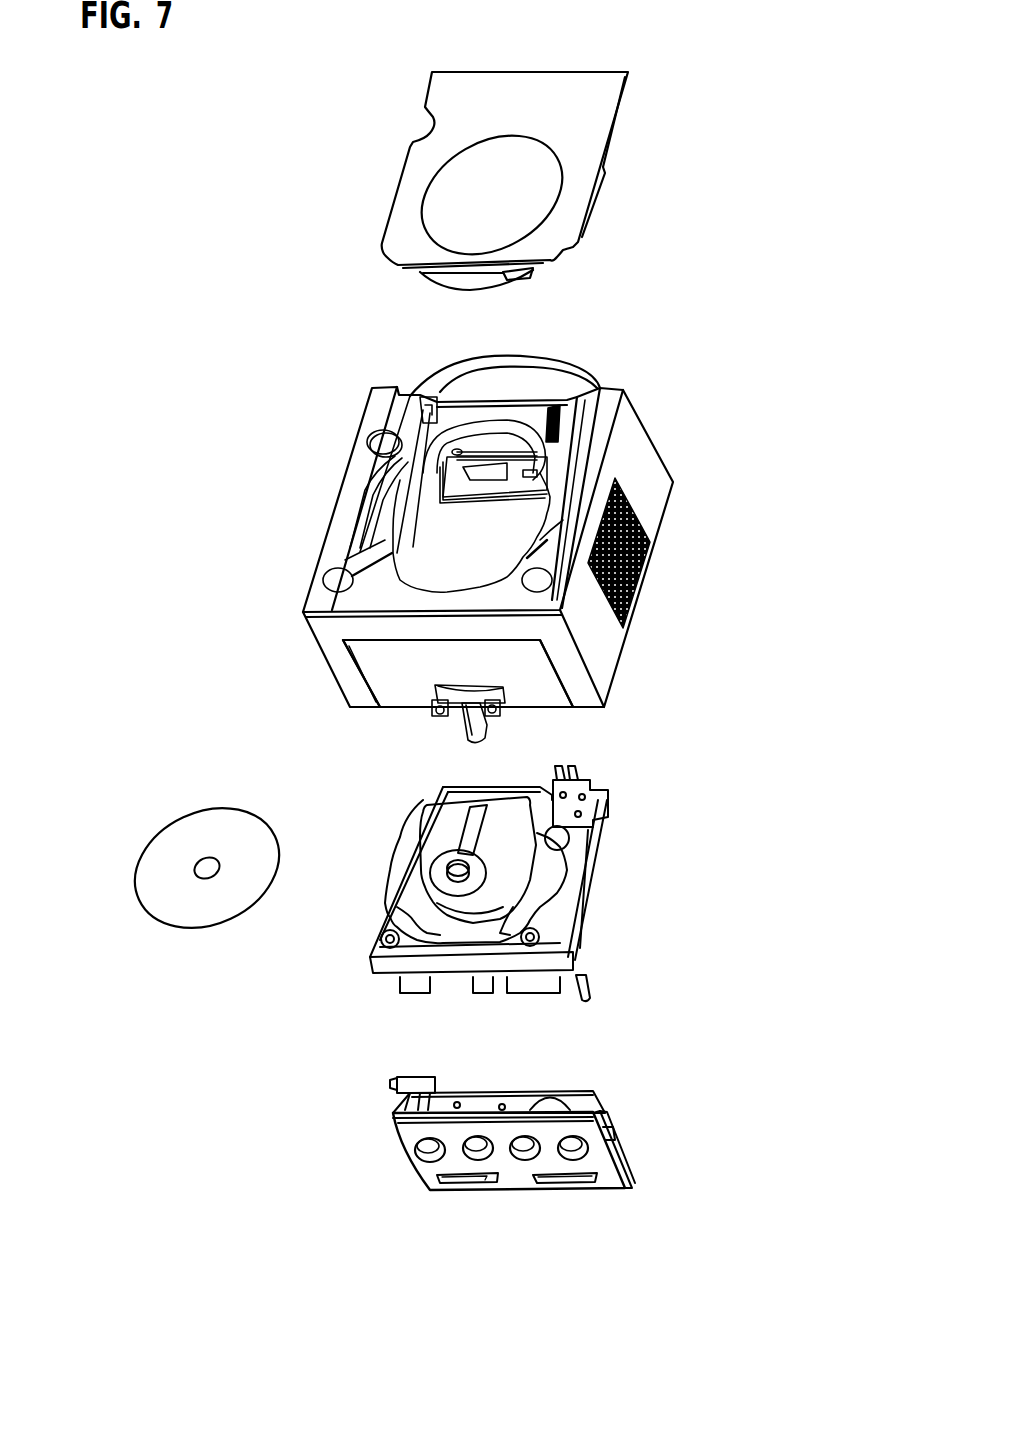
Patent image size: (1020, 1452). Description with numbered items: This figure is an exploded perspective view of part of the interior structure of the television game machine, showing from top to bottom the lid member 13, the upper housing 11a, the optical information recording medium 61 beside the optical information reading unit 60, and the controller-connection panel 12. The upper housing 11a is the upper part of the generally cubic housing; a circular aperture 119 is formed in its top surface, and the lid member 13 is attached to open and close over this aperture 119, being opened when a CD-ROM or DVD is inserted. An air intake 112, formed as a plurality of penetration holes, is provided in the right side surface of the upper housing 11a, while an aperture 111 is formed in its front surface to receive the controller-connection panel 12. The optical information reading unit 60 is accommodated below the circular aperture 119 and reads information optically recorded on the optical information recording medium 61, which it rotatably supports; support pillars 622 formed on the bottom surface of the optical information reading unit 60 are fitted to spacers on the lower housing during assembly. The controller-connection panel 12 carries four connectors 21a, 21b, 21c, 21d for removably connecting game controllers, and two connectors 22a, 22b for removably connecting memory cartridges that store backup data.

The lid member 13 is at (578, 122).
The upper housing 11a is at (643, 458).
The circular aperture 119 is at (467, 540).
The air intake 112 is at (645, 563).
The aperture 111 is at (408, 687).
The optical information recording medium 61 is at (195, 837).
The optical information reading unit 60 is at (627, 855).
The support pillars 622 is at (583, 980).
The controller-connection panel 12 is at (393, 1165).
The connector 21a is at (427, 1163).
The connector 21b is at (477, 1160).
The connector 21c is at (527, 1160).
The connector 21d is at (575, 1160).
The connector 22a is at (457, 1185).
The connector 22b is at (560, 1187).